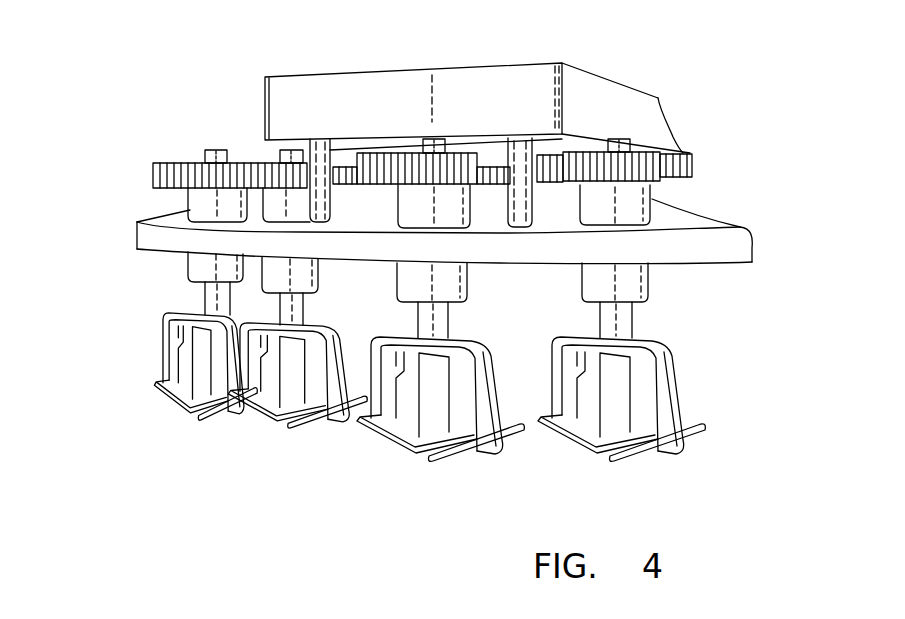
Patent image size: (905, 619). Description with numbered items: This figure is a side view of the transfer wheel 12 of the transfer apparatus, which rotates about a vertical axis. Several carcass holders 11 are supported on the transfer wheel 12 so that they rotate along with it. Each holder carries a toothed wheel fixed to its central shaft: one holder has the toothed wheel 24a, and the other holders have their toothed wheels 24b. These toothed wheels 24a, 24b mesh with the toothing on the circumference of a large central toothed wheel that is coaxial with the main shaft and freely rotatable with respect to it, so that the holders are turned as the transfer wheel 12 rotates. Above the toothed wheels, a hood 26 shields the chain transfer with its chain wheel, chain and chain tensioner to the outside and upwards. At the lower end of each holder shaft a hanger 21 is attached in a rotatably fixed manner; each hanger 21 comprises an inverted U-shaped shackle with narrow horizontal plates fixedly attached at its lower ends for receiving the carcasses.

The carcass holder 11 is at (467, 284).
The transfer wheel 12 is at (165, 222).
The hanger 21 is at (265, 400).
The toothed wheel 24a is at (407, 160).
The toothed wheel 24b is at (256, 164).
The hood 26 is at (273, 108).